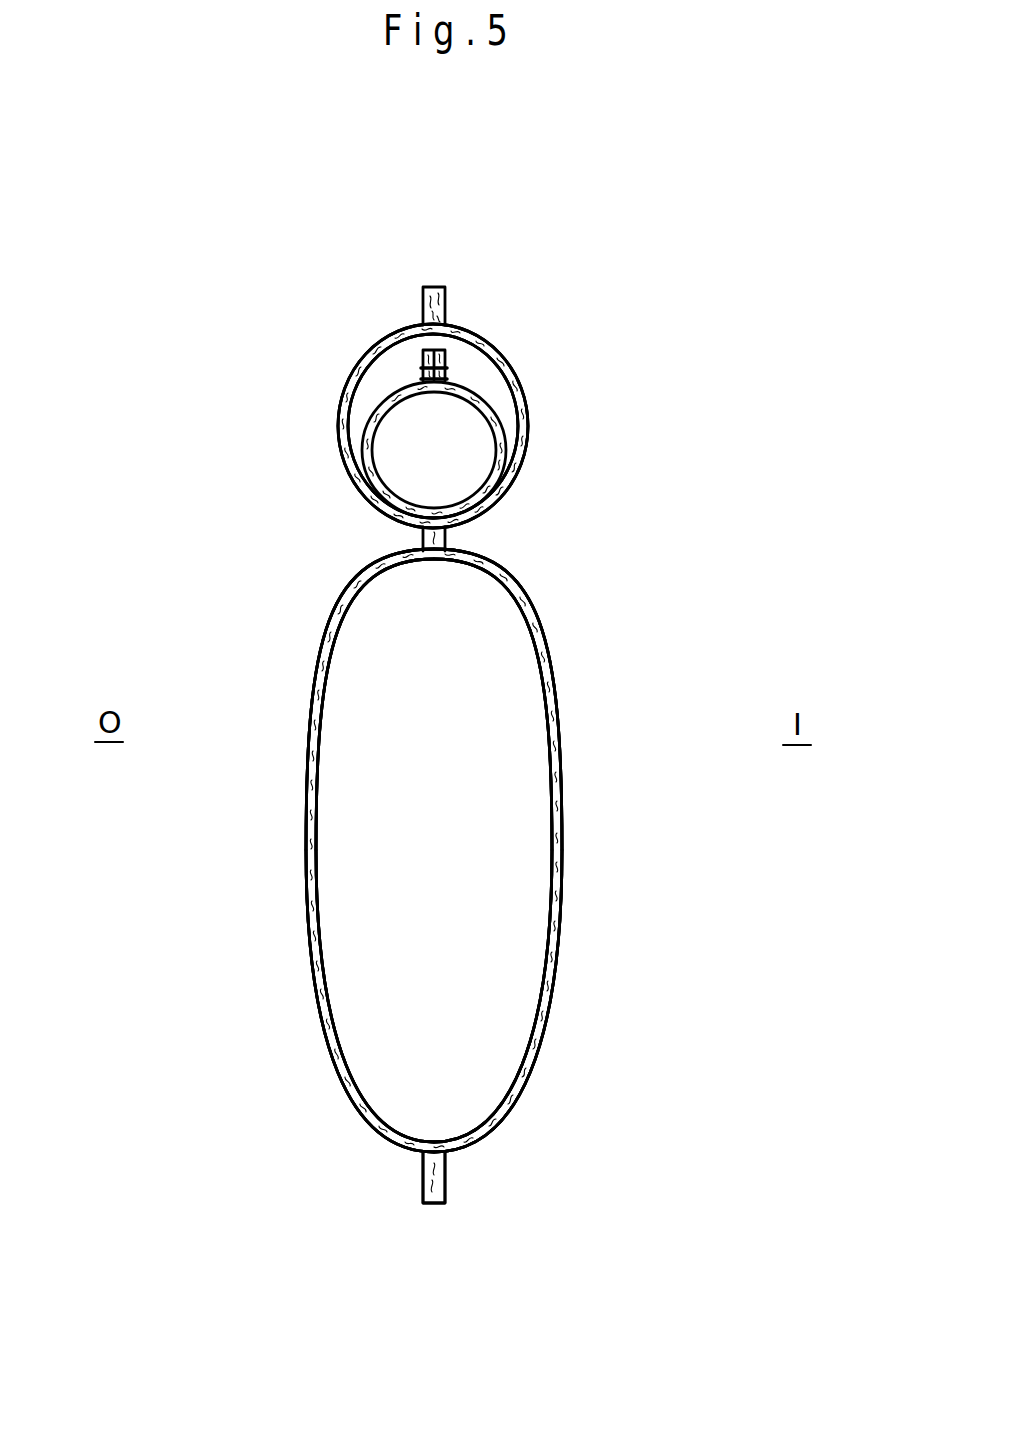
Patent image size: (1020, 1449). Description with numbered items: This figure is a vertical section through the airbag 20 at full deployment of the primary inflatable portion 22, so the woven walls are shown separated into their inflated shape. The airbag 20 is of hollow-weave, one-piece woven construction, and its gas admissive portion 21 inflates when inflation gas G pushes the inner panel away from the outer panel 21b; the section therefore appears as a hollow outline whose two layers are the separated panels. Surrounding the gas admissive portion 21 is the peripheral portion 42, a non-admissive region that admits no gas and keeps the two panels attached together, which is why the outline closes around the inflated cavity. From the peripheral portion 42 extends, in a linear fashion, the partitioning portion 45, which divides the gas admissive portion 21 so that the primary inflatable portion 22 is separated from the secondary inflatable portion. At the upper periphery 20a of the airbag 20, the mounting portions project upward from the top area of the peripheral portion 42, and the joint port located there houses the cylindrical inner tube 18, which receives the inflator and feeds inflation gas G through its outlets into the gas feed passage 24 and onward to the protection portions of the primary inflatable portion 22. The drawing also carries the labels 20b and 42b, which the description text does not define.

The airbag 20 is at (191, 279).
The upper periphery of the airbag 20a is at (423, 303).
The lower portion of seal 20b is at (380, 1210).
The gas feed passage 24 is at (382, 388).
The inner tube 18 is at (485, 400).
The peripheral portion 42 is at (445, 316).
The partitioning portion 45 is at (447, 537).
The primary inflatable portion 22 is at (505, 814).
The gas admissive portion 21 is at (517, 997).
The outer panel 21b is at (323, 1000).
The lower projection 42b is at (445, 1185).